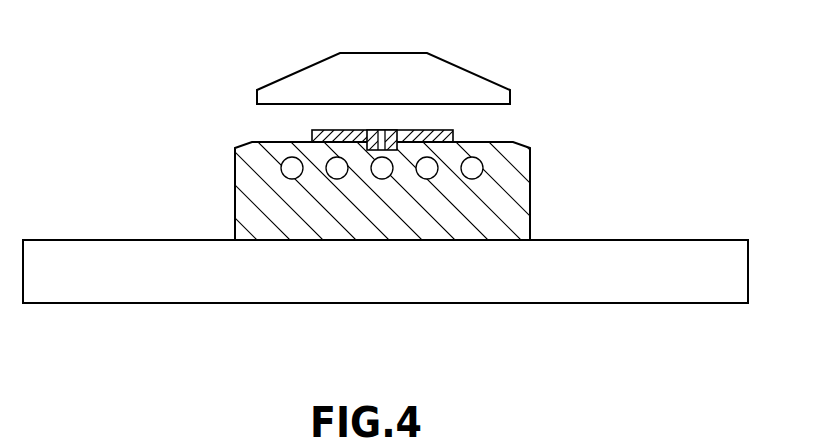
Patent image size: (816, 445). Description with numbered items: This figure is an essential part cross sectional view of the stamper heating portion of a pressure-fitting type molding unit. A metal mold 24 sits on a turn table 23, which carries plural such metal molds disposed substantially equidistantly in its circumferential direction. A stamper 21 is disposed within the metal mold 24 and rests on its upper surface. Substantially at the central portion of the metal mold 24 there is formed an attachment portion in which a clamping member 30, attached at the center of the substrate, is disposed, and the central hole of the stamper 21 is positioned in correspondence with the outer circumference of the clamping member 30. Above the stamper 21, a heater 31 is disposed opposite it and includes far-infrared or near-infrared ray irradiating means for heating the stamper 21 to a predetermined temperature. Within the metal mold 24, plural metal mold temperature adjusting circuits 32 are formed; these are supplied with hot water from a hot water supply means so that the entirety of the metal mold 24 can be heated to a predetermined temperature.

The stamper 21 is at (453, 130).
The turn table 23 is at (684, 251).
The metal mold 24 is at (250, 173).
The clamping member 30 is at (395, 150).
The heater 31 is at (467, 83).
The metal mold temperature adjusting circuit 32 is at (293, 179).